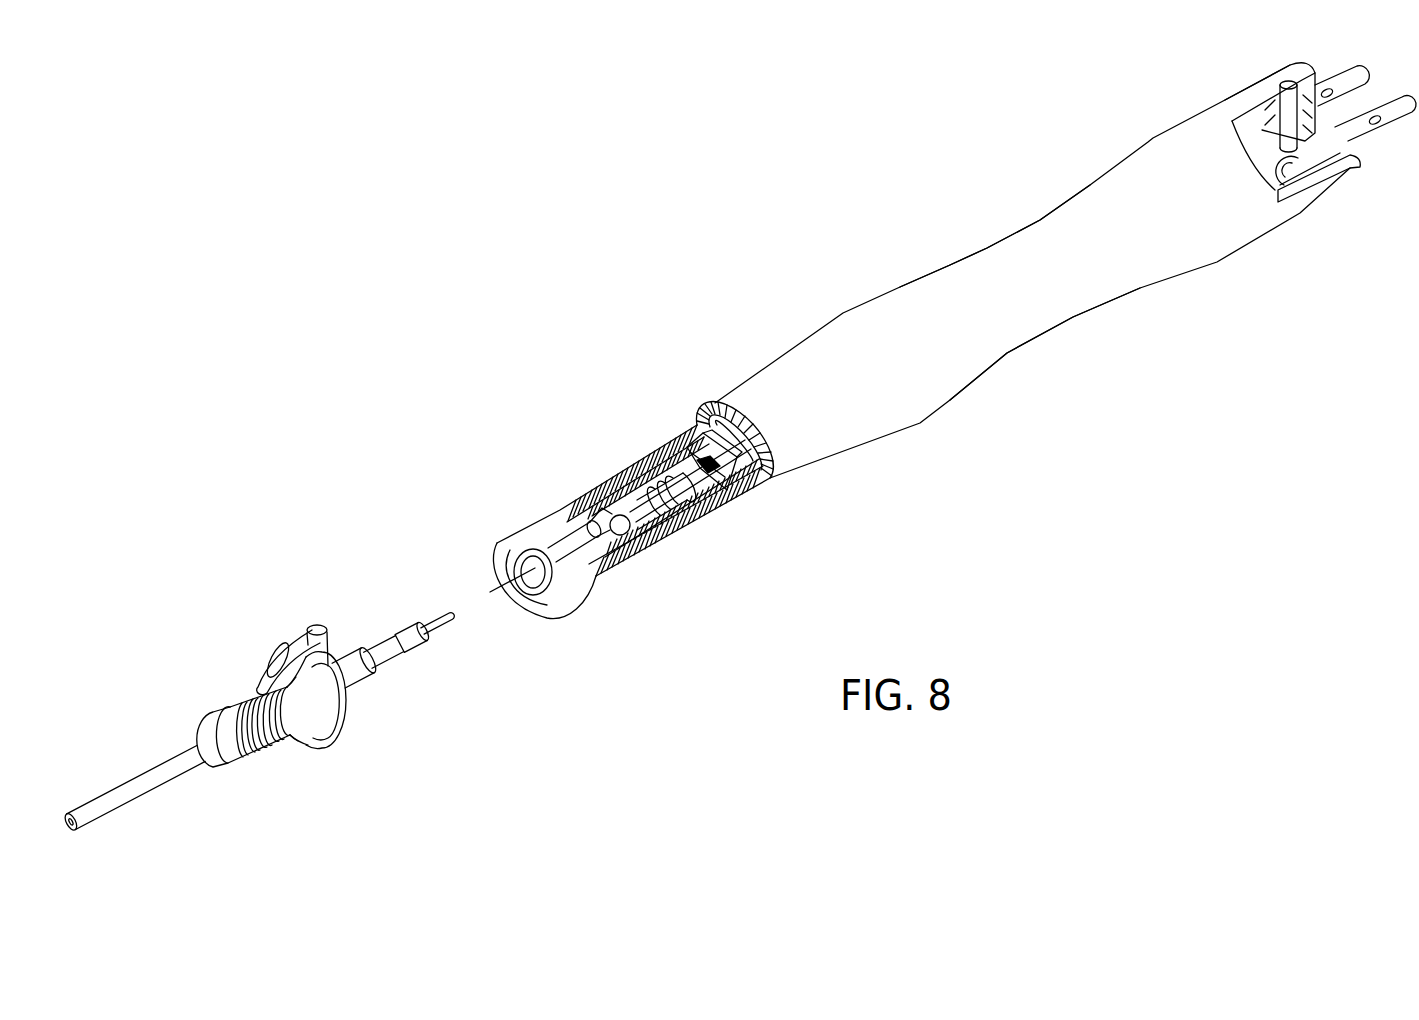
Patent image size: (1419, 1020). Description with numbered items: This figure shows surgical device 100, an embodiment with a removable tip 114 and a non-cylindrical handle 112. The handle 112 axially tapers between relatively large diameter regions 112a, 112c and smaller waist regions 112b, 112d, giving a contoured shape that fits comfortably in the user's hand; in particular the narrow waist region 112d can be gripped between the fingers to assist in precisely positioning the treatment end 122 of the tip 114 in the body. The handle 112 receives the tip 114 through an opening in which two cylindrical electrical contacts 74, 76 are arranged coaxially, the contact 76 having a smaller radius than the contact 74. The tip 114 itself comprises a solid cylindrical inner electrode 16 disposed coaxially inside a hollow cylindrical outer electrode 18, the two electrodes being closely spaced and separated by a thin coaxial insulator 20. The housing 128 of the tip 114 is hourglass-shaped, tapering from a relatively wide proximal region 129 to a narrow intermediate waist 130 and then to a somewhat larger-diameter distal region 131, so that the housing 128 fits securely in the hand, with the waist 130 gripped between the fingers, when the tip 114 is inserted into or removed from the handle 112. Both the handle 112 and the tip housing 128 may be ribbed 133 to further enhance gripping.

The surgical device 100 is at (603, 348).
The handle 112 is at (837, 295).
The large diameter region 112a is at (1283, 228).
The waist region 112b is at (988, 246).
The large diameter region 112c is at (925, 424).
The narrow waist region 112d is at (680, 537).
The ribs 133 is at (640, 560).
The electrical contact 74 is at (632, 488).
The electrical contact 76 is at (682, 462).
The tip 114 is at (240, 636).
The outer electrode 18 is at (385, 637).
The coaxial insulator 20 is at (417, 640).
The inner electrode 16 is at (445, 617).
The treatment end 122 is at (131, 816).
The housing 128 is at (293, 765).
The proximal region 129 is at (343, 730).
The intermediate waist 130 is at (253, 698).
The distal region 131 is at (212, 723).